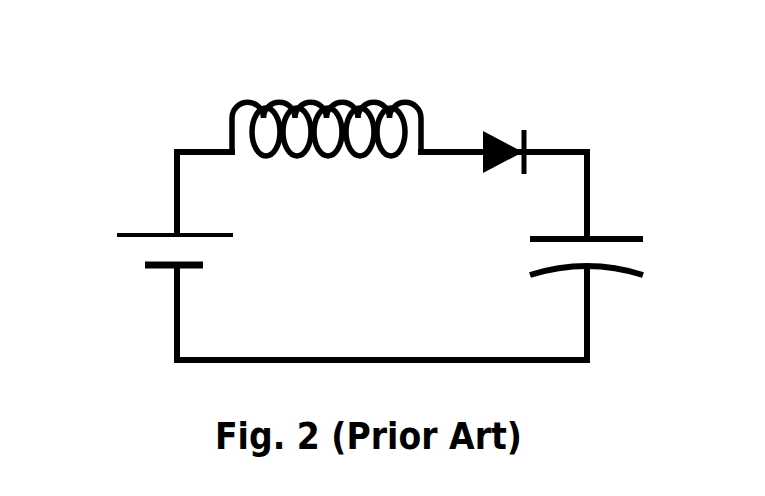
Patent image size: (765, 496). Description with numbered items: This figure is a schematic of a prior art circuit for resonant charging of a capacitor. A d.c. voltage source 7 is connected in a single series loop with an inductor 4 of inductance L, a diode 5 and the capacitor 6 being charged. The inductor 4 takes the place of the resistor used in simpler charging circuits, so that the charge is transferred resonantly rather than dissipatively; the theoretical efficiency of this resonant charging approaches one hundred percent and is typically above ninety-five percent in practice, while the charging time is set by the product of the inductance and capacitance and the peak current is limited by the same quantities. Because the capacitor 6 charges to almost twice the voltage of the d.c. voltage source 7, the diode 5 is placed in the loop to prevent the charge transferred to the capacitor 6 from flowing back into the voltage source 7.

The inductor 4 is at (327, 86).
The diode 5 is at (497, 102).
The capacitor 6 is at (631, 210).
The d.c. voltage source 7 is at (108, 213).